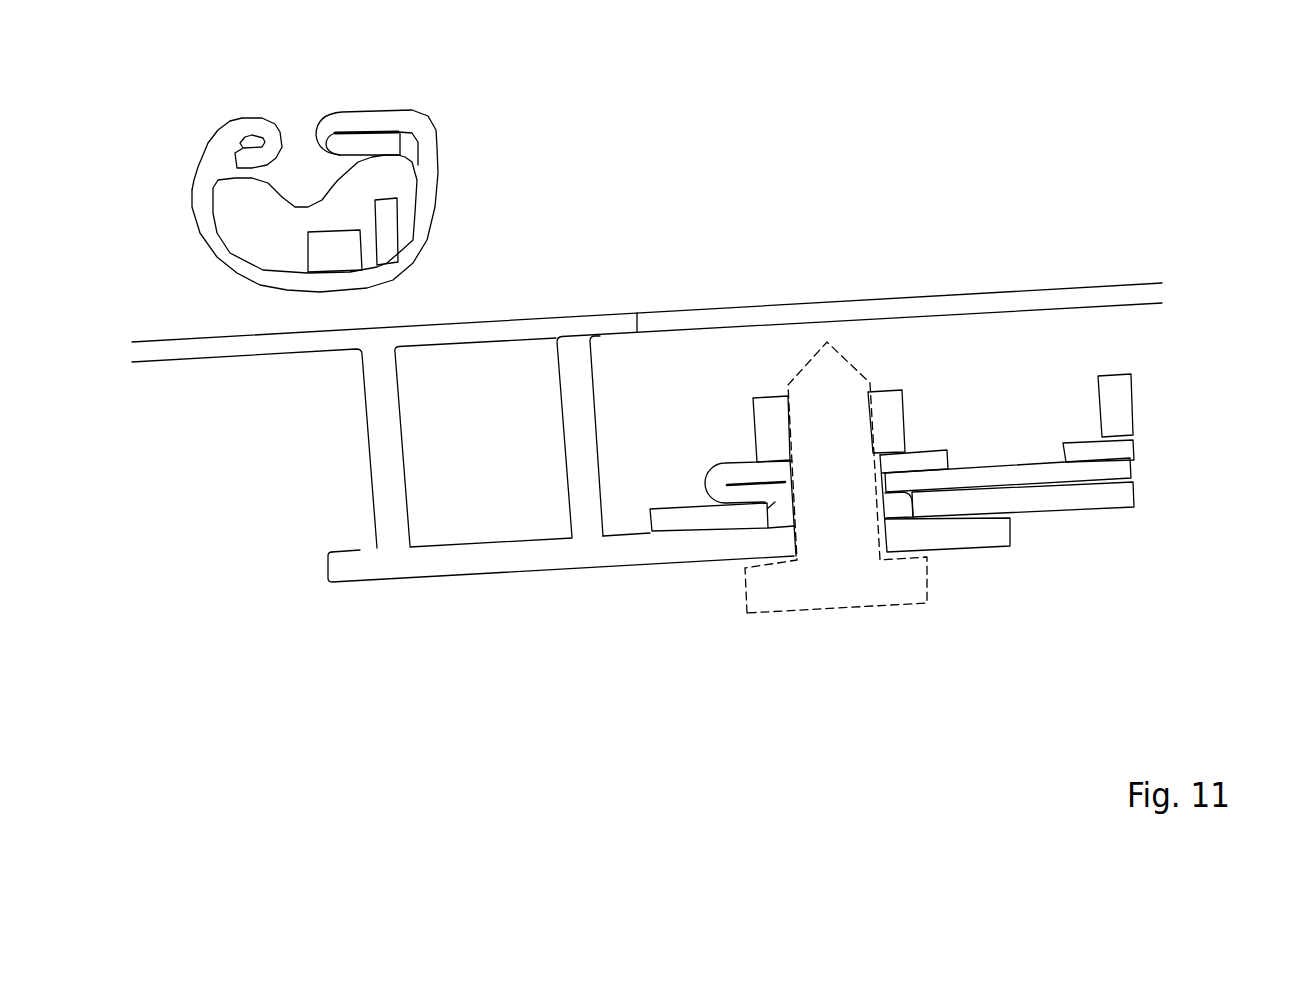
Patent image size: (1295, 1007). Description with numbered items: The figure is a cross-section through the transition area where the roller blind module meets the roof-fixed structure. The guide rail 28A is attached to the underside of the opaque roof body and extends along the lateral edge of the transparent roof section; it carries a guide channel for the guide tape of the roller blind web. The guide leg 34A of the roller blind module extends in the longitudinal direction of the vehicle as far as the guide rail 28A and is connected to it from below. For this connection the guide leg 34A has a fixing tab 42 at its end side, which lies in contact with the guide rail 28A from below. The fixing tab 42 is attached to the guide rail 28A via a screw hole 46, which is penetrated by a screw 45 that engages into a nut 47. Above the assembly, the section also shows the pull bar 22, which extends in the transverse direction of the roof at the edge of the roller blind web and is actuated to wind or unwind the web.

The pull bar 22 is at (425, 148).
The guide leg 34A is at (447, 557).
The fixing tab 42 is at (708, 547).
The screw 45 is at (852, 587).
The screw hole 46 is at (897, 518).
The nut 47 is at (892, 415).
The guide rail 28A is at (1120, 495).